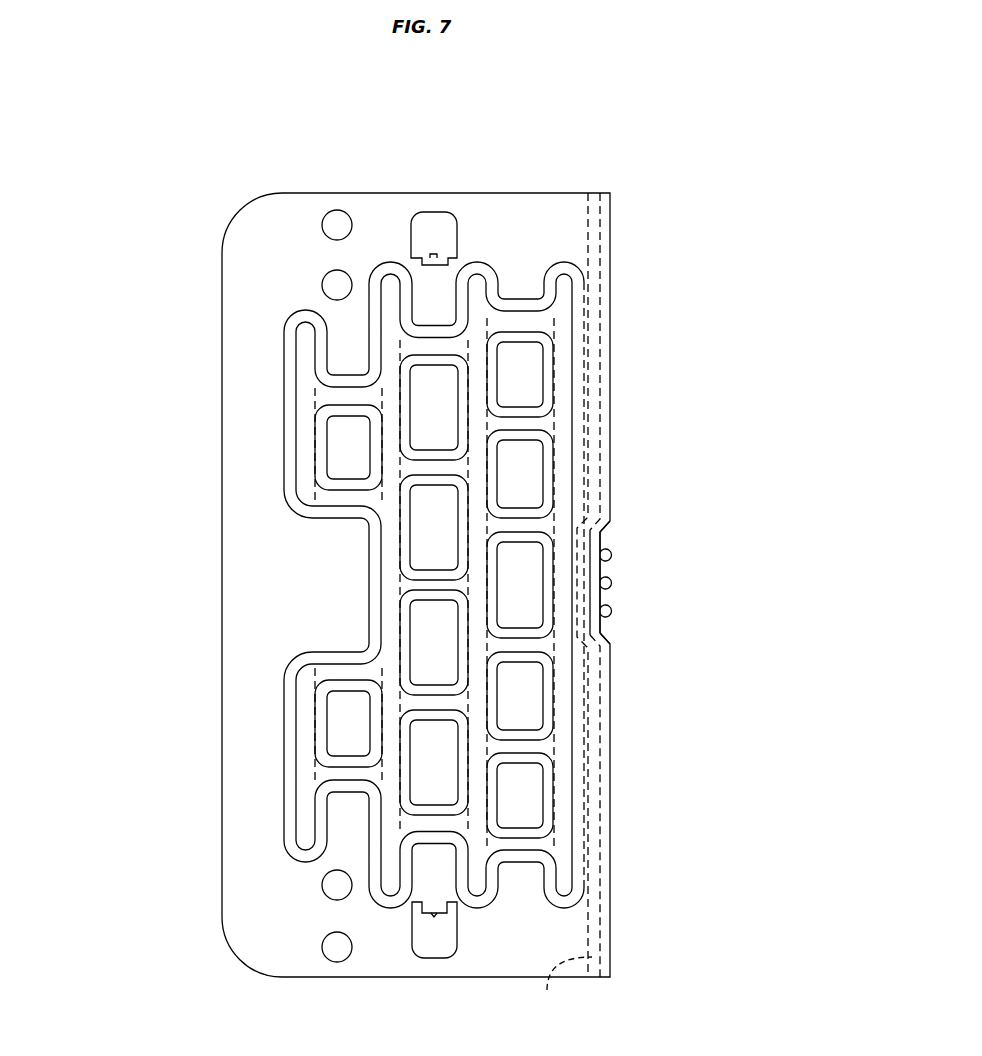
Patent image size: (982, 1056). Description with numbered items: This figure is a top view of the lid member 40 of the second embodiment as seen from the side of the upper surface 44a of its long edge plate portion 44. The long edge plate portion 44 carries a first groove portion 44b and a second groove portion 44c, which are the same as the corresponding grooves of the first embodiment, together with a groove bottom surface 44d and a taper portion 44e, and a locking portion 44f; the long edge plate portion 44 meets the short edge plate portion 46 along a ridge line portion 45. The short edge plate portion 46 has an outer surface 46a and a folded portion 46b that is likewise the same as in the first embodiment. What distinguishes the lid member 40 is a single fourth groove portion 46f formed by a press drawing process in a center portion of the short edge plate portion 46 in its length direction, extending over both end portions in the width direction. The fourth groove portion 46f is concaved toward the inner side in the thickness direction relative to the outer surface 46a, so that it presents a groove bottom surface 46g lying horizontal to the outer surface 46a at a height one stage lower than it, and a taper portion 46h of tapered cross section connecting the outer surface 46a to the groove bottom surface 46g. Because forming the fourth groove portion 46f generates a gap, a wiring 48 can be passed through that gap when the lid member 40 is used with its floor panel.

The lid member 40 is at (352, 156).
The long edge plate portion 44 is at (218, 305).
The upper surface 44a is at (250, 380).
The first groove portion 44b is at (303, 440).
The second groove portion 44c is at (347, 670).
The groove bottom surface 44d is at (305, 769).
The taper portion 44e is at (578, 855).
The locking portion 44f is at (433, 914).
The ridge line portion 45 is at (683, 952).
The short edge plate portion 46 is at (614, 302).
The outer surface 46a is at (612, 372).
The folded portion 46b is at (547, 990).
The fourth groove portion 46f is at (612, 550).
The groove bottom surface 46g is at (612, 598).
The taper portion 46h is at (612, 635).
The wiring 48 is at (612, 583).